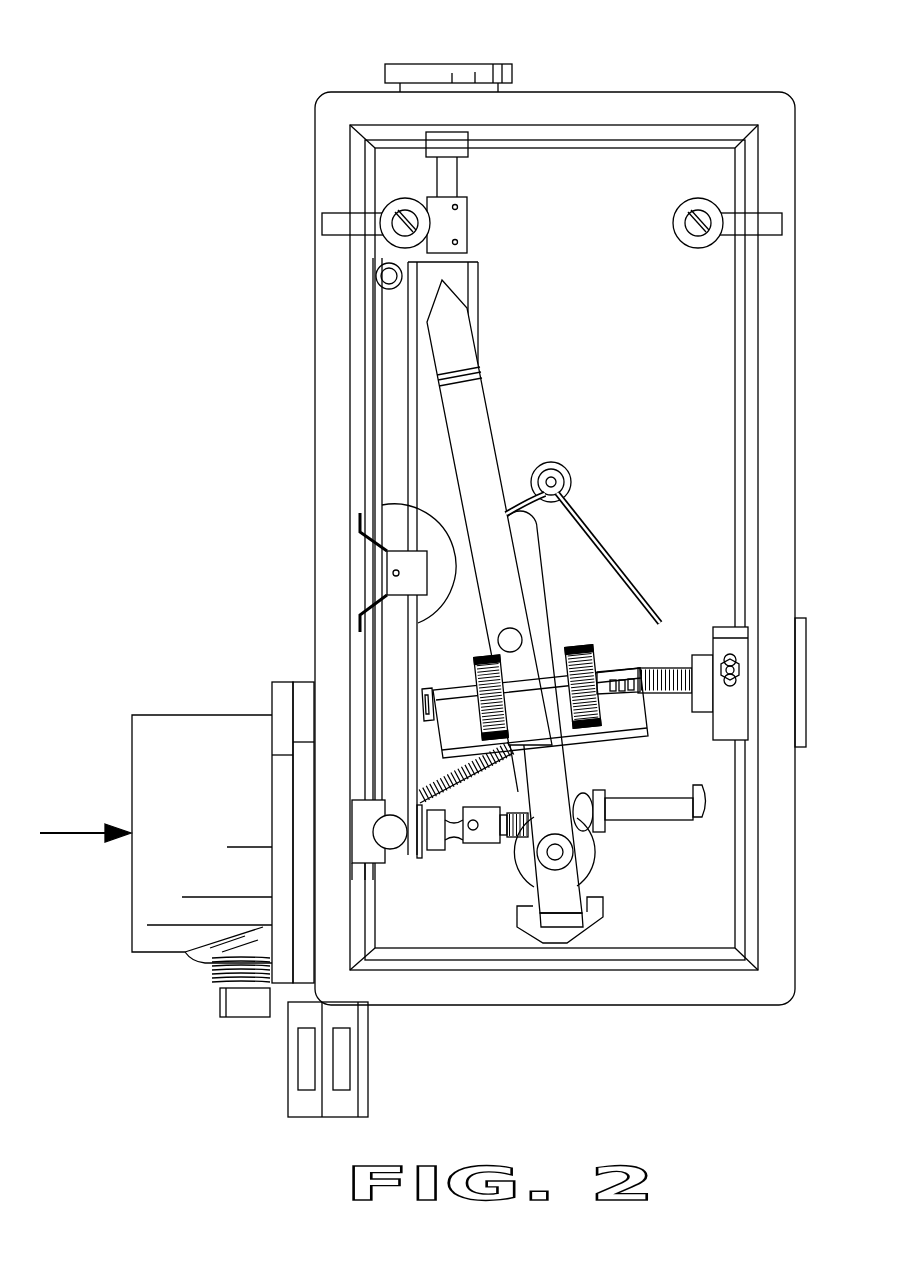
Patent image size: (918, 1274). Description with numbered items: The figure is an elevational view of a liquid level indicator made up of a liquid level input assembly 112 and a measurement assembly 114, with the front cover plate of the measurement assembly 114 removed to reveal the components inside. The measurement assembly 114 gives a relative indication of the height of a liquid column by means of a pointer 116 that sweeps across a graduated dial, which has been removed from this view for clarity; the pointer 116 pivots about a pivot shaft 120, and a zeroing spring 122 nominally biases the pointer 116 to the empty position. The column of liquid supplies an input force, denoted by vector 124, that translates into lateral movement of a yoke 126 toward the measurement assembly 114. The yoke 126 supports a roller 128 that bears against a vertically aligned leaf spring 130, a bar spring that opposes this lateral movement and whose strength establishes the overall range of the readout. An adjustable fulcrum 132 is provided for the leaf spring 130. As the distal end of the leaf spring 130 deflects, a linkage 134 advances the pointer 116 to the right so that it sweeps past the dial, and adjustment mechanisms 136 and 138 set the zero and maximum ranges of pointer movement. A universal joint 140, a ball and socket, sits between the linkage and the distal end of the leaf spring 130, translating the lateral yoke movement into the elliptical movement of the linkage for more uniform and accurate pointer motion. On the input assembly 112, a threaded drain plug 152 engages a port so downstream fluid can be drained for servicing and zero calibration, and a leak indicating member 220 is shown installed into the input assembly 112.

The liquid level input assembly 112 is at (205, 735).
The measurement assembly 114 is at (667, 100).
The pointer 116 is at (462, 348).
The pivot shaft 120 is at (559, 855).
The zeroing spring 122 is at (435, 775).
The input force vector 124 is at (99, 828).
The yoke 126 is at (362, 808).
The roller 128 is at (423, 895).
The leaf spring 130 is at (437, 537).
The adjustable fulcrum 132 is at (368, 577).
The linkage 134 is at (585, 795).
The adjustment mechanism 136 is at (452, 64).
The adjustment mechanism 138 is at (808, 680).
The universal joint 140 is at (485, 838).
The drain plug 152 is at (230, 1013).
The leak indicating member 220 is at (290, 1080).